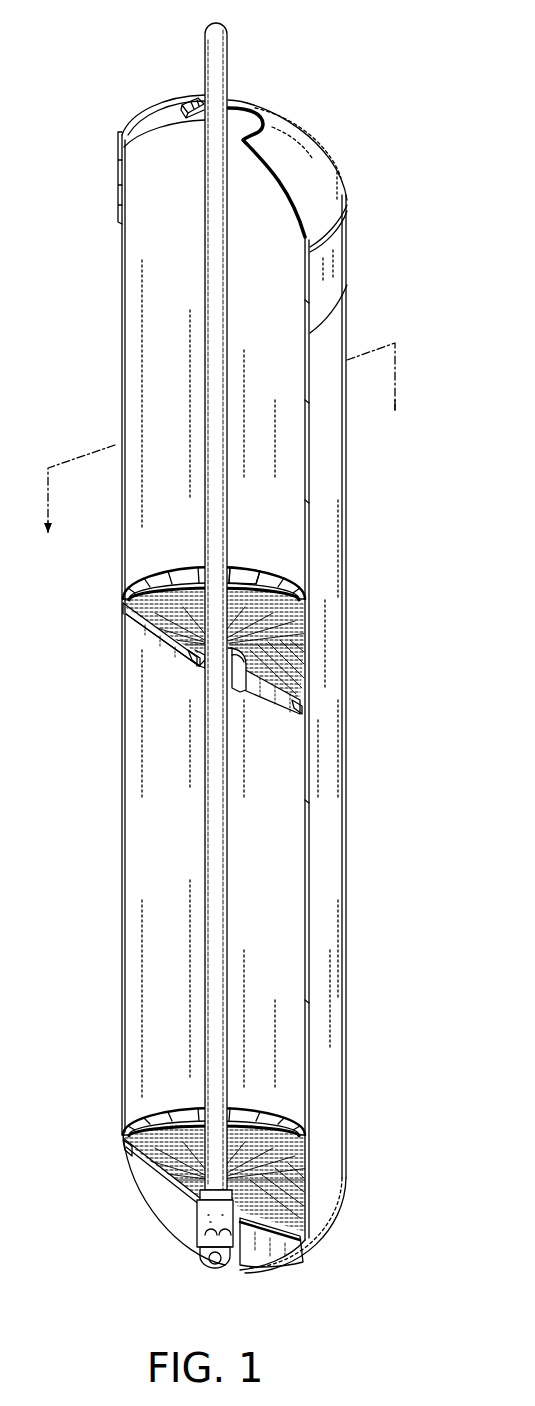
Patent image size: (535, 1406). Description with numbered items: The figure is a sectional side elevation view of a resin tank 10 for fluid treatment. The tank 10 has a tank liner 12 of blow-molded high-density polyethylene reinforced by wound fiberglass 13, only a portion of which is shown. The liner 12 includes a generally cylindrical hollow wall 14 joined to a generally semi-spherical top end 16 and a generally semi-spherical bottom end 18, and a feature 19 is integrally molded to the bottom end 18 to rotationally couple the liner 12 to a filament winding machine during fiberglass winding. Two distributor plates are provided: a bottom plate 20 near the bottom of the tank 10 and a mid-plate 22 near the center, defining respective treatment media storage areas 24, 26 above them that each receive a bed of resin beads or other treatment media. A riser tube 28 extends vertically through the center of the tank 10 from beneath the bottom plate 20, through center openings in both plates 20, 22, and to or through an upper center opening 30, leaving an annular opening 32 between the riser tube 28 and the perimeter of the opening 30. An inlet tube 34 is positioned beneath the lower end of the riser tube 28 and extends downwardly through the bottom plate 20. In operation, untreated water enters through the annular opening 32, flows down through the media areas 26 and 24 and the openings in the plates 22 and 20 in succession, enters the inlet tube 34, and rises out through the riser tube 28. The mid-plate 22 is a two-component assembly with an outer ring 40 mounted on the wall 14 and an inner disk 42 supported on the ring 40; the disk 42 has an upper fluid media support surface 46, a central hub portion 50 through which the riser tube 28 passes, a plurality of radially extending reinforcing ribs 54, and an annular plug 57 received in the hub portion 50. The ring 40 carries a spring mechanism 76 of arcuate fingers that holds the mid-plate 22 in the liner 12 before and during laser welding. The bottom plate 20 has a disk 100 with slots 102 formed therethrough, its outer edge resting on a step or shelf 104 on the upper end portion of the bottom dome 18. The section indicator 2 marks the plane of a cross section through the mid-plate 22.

The resin tank 10 is at (380, 166).
The tank liner 12 is at (320, 585).
The wound fiberglass 13 is at (337, 243).
The wall 14 is at (327, 690).
The top end 16 is at (287, 110).
The bottom end 18 is at (330, 1233).
The feature 19 is at (220, 1265).
The bottom plate distributor 20 is at (158, 1160).
The mid-plate distributor plate 22 is at (138, 631).
The treatment media storage area 24 is at (277, 1078).
The treatment media storage area 26 is at (283, 533).
The riser tube 28 is at (213, 267).
The upper center opening 30 is at (237, 93).
The annular opening 32 is at (193, 93).
The inlet tube 34 is at (195, 1220).
The outer ring 40 is at (120, 598).
The inner disk 42 is at (305, 645).
The upper fluid media support surface 46 is at (247, 578).
The central hub portion 50 is at (233, 688).
The reinforcing ribs 54 is at (170, 648).
The annular plug 57 is at (195, 650).
The spring mechanism 76 is at (168, 565).
The disk 100 is at (153, 1137).
The slots 102 is at (297, 1140).
The step or shelf 104 is at (128, 1147).
The section line 2- 2 is at (221, 455).